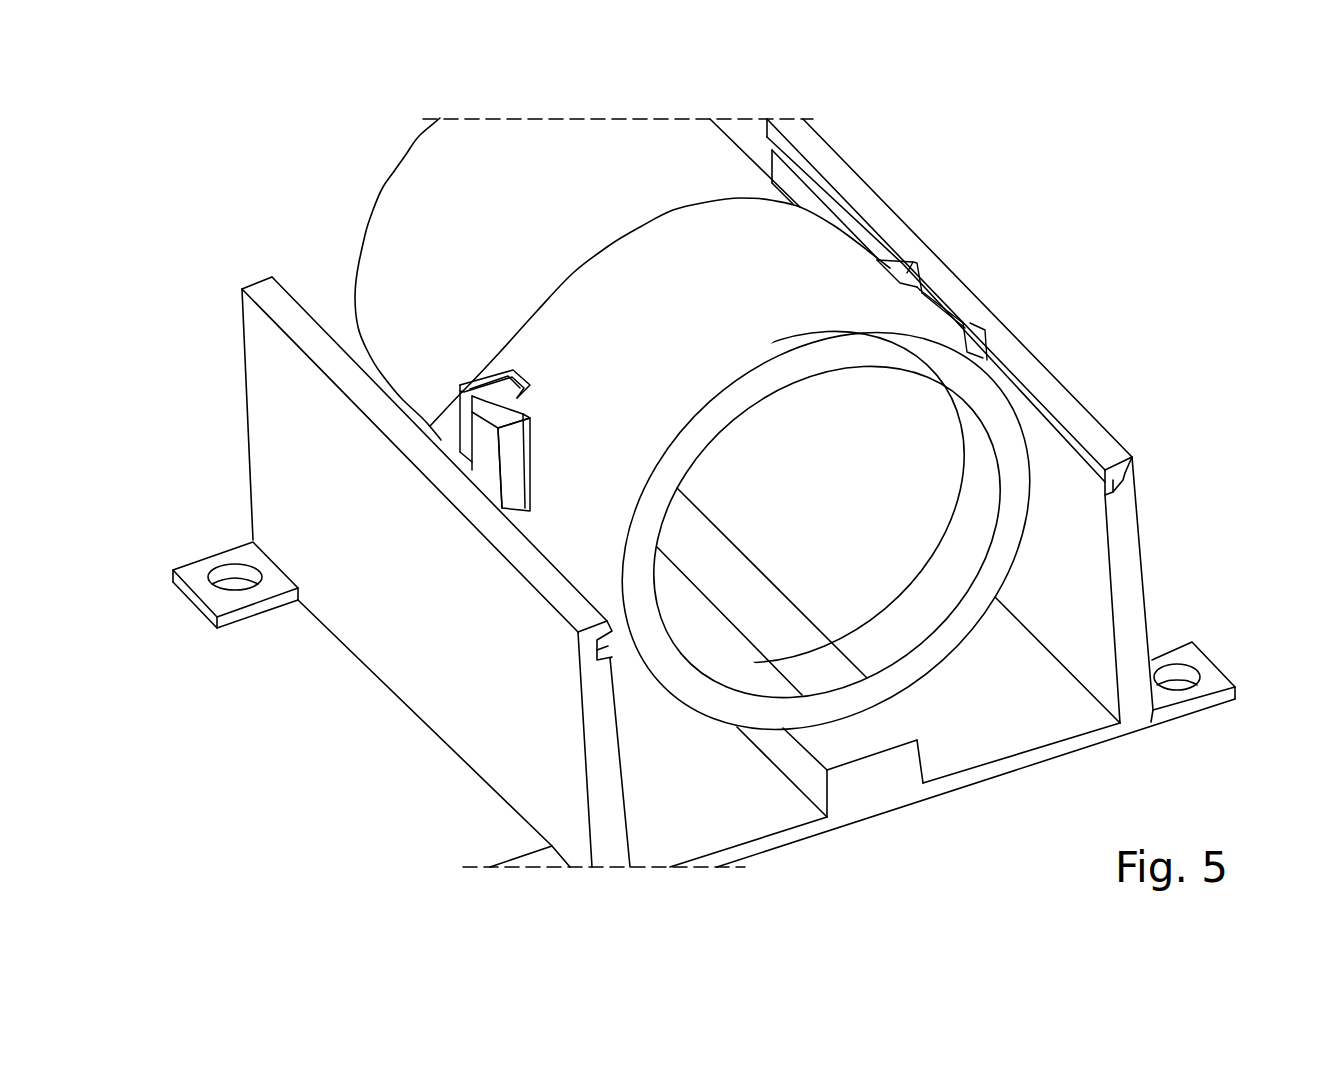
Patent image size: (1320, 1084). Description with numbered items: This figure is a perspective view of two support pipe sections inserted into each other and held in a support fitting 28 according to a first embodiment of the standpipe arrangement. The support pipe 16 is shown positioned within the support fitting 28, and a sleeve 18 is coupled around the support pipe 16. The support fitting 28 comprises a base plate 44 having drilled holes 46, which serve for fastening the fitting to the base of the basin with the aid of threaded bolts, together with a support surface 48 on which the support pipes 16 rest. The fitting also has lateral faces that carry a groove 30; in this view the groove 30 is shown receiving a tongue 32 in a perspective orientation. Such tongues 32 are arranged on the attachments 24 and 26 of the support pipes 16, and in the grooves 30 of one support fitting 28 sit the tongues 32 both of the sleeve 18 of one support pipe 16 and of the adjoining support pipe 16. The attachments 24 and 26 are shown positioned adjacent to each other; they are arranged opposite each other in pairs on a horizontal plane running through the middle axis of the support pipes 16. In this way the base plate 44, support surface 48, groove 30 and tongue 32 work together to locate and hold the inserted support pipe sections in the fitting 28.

The support pipe 16 is at (377, 273).
The sleeve 18 is at (840, 257).
The attachment 24 is at (467, 423).
The attachment 26 is at (485, 473).
The support fitting 28 is at (1157, 565).
The groove 30 is at (597, 650).
The tongue 32 is at (990, 350).
The base plate 44 is at (1092, 748).
The drilled holes 46 is at (233, 582).
The support surface 48 is at (843, 740).